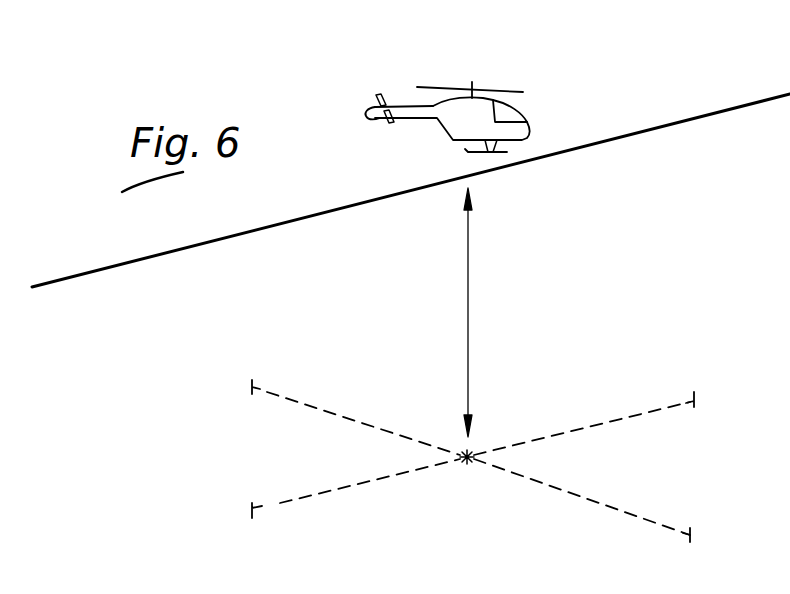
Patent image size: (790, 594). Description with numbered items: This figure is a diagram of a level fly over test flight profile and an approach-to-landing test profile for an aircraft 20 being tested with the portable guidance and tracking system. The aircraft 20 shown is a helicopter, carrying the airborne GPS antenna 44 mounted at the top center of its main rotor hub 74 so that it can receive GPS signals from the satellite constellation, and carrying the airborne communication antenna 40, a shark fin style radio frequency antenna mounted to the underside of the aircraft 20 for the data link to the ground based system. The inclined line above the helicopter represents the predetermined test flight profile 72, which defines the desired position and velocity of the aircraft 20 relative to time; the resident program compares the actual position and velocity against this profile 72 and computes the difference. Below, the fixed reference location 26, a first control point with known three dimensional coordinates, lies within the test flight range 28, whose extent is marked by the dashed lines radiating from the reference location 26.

The aircraft 20 is at (523, 117).
The airborne GPS antenna 44 is at (471, 88).
The main rotor hub 74 is at (472, 82).
The airborne communication antenna 40 is at (468, 148).
The predetermined test flight profile 72 is at (712, 110).
The reference location 26 is at (468, 460).
The test flight range 28 is at (230, 550).